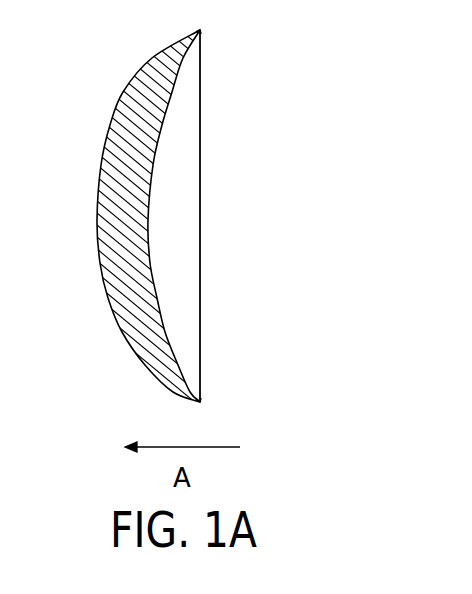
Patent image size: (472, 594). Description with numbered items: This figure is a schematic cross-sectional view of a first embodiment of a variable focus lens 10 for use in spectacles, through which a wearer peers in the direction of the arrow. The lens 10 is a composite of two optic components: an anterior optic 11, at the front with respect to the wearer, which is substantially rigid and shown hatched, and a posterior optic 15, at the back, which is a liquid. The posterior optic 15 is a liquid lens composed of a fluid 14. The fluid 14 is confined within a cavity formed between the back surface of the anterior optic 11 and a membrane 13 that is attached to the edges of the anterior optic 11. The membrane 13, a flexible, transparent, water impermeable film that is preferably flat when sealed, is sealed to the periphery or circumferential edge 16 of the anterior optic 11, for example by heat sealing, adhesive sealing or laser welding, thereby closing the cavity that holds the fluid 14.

The variable focus lens 10 is at (160, 218).
The anterior optic 11 is at (130, 145).
The membrane 13 is at (202, 332).
The fluid 14 is at (177, 157).
The posterior optic 15 is at (167, 253).
The circumferential edge 16 is at (201, 31).